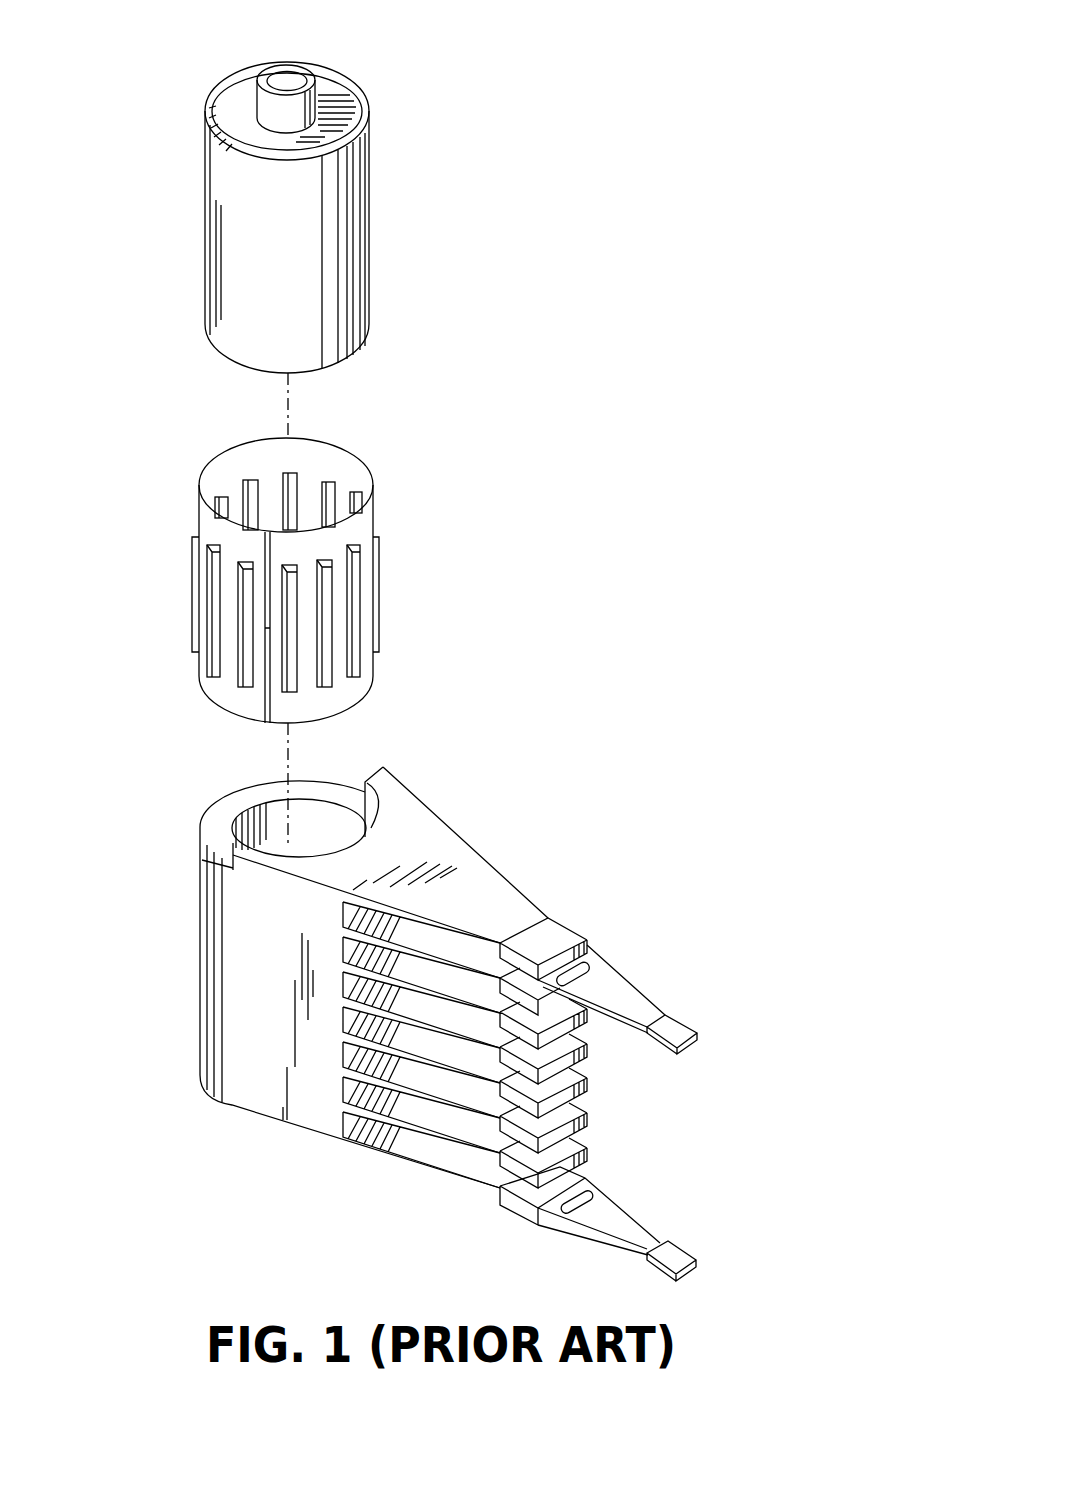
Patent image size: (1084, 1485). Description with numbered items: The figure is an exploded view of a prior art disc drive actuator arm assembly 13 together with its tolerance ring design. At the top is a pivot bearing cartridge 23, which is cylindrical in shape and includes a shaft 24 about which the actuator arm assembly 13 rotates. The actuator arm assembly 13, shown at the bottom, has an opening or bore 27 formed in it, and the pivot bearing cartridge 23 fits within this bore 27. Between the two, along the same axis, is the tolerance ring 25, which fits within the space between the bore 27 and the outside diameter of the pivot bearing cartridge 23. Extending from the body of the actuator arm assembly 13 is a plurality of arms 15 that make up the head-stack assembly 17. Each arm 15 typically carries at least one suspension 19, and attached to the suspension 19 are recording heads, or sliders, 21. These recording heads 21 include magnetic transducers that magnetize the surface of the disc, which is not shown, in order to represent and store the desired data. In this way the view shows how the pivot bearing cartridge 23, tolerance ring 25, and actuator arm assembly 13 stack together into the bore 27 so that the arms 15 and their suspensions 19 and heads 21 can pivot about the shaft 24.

The actuator arm assembly 13 is at (255, 1100).
The arm 15 is at (473, 870).
The head-stack assembly 17 is at (420, 1170).
The suspension 19 is at (613, 987).
The recording head 21 is at (695, 1037).
The pivot bearing cartridge 23 is at (353, 247).
The shaft 24 is at (291, 68).
The tolerance ring 25 is at (377, 592).
The bore 27 is at (360, 795).